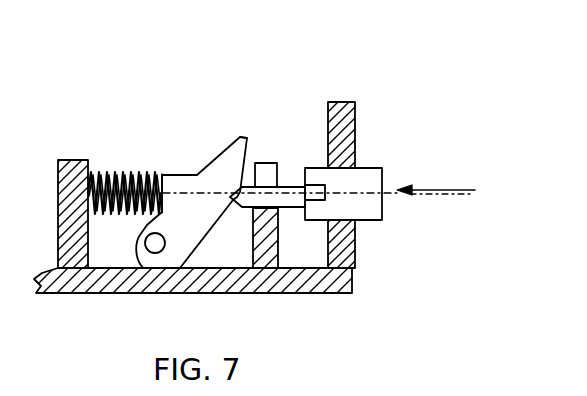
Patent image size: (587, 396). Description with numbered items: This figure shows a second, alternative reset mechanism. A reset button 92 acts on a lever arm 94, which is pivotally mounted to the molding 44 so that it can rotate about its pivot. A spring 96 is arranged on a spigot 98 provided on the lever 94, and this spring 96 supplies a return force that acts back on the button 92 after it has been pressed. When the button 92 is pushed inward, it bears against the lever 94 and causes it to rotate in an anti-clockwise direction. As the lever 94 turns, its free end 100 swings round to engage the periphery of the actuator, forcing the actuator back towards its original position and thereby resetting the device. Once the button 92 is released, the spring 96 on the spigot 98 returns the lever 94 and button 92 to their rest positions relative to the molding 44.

The molding 44 is at (100, 294).
The reset button 92 is at (464, 189).
The lever arm 94 is at (222, 133).
The spring 96 is at (108, 170).
The spigot 98 is at (146, 170).
The free end 100 is at (257, 135).